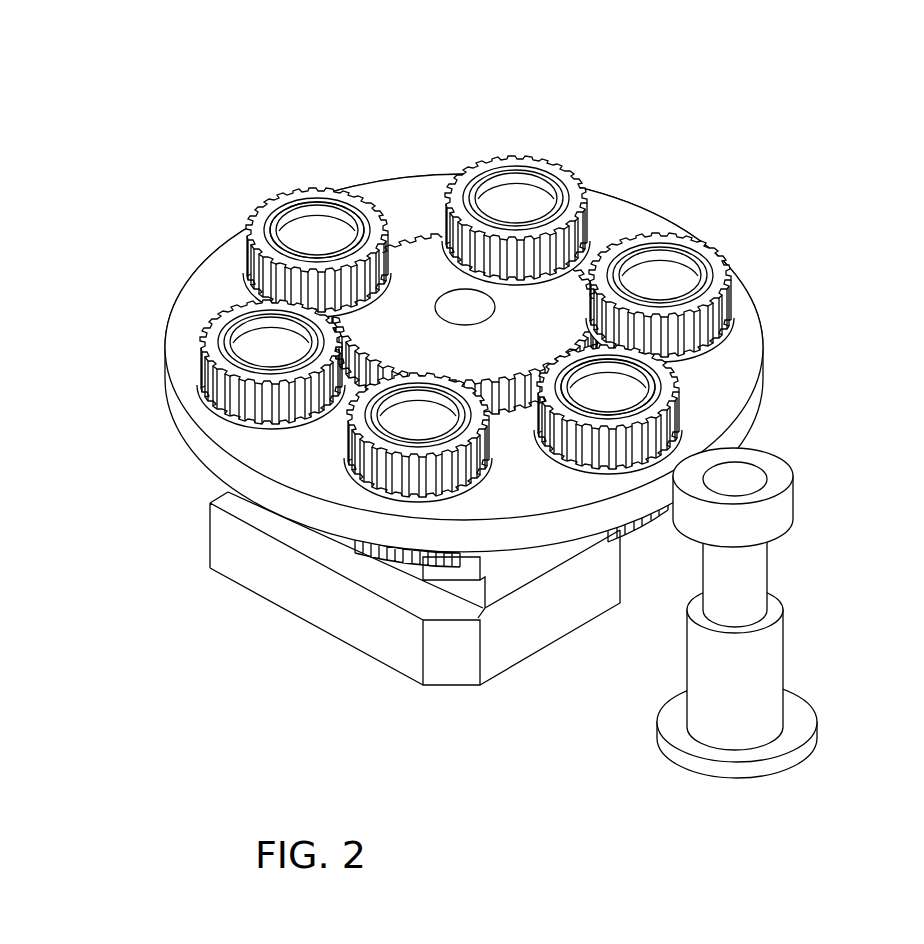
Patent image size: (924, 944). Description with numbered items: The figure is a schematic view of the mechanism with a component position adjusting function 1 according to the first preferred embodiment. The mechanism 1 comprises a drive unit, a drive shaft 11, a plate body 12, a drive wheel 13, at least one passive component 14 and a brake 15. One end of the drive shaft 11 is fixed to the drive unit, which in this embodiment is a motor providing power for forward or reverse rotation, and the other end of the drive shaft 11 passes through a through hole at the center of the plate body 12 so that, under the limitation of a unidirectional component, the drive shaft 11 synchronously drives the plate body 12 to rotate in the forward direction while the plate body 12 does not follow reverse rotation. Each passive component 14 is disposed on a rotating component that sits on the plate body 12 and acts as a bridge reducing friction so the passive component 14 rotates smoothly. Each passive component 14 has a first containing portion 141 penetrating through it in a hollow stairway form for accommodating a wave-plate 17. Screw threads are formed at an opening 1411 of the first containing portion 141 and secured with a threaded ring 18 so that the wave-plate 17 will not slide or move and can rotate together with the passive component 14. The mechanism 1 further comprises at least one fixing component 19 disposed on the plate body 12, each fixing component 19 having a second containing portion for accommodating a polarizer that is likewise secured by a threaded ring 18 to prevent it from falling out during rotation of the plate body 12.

The mechanism with a component position adjusting function 1 is at (207, 60).
The drive shaft 11 is at (470, 306).
The plate body 12 is at (733, 347).
The drive wheel 13 is at (480, 277).
The passive component 14 is at (433, 183).
The first containing portion 141 is at (325, 205).
The opening 1411 is at (302, 207).
The brake 15 is at (723, 483).
The wave-plate 17 is at (605, 387).
The threaded ring 18 is at (262, 215).
The fixing component 19 is at (430, 560).